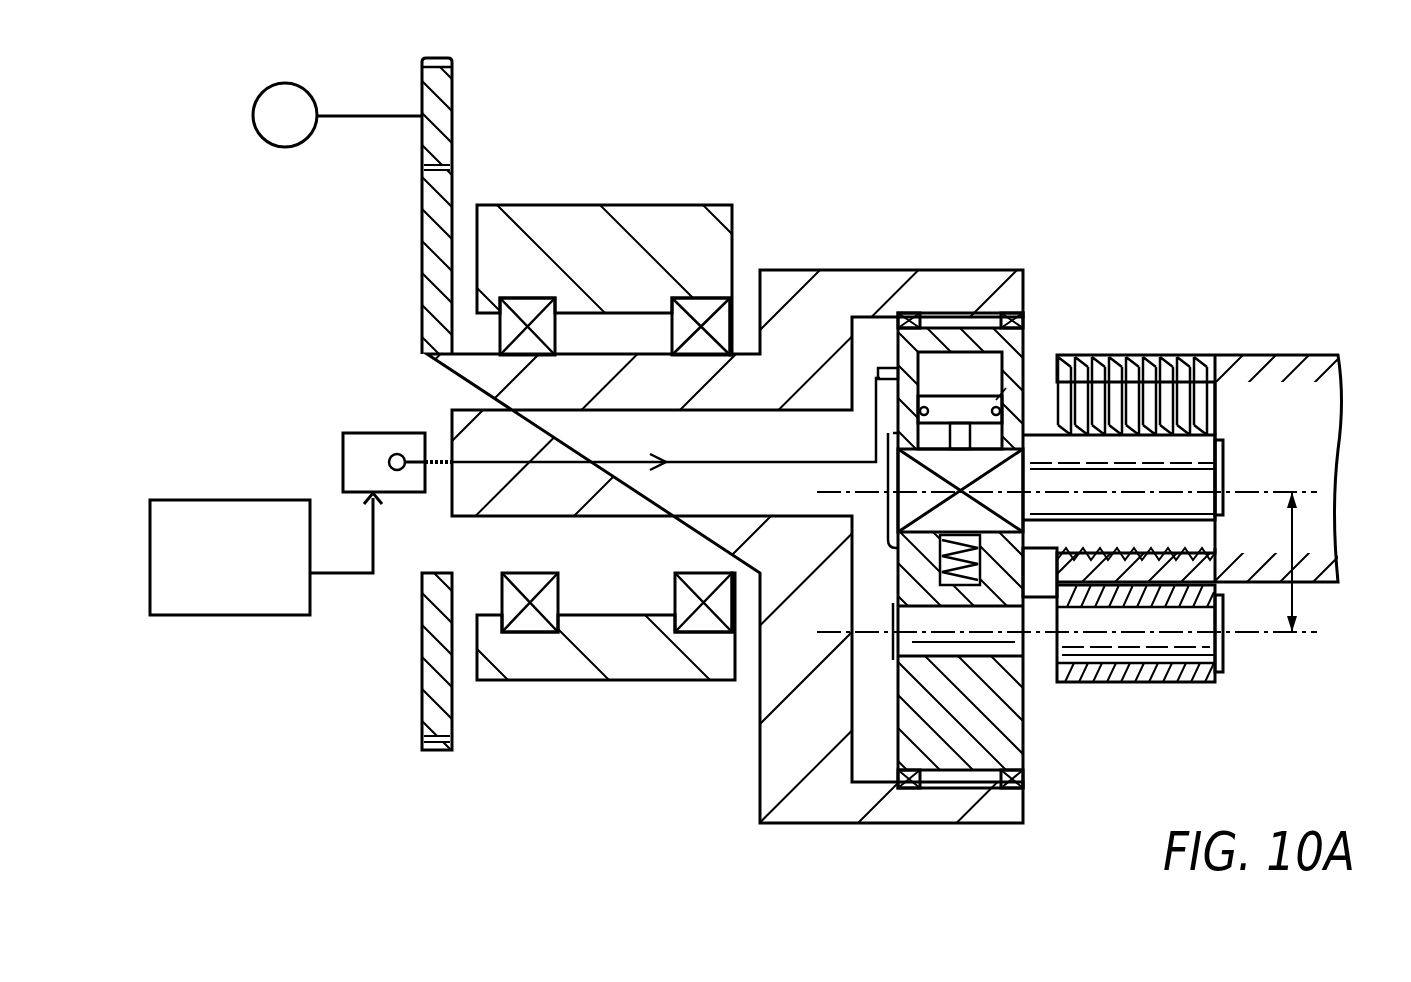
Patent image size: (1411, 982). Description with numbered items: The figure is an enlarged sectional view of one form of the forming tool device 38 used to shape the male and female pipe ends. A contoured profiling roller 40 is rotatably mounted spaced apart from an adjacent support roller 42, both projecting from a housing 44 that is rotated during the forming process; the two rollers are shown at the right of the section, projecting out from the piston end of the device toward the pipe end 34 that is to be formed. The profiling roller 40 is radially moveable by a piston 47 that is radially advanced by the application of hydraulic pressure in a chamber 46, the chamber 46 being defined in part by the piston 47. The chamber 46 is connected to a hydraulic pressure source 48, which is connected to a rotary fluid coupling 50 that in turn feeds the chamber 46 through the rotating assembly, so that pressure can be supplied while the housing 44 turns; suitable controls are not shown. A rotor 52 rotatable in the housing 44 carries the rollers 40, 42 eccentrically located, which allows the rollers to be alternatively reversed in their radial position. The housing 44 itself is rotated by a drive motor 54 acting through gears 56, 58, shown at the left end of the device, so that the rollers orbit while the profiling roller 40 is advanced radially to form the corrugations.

The threaded nut 34 is at (1218, 355).
The forming tool device 38 is at (857, 231).
The contoured profiling roller 40 is at (1188, 452).
The support roller 42 is at (1115, 672).
The housing 44 is at (785, 276).
The chamber 46 is at (1028, 355).
The piston 47 is at (1028, 358).
The hydraulic pressure source 48 is at (218, 618).
The rotary fluid coupling 50 is at (345, 433).
The rotor 52 is at (946, 332).
The drive motor 54 is at (278, 147).
The gear 56 is at (452, 124).
The gear 58 is at (422, 250).